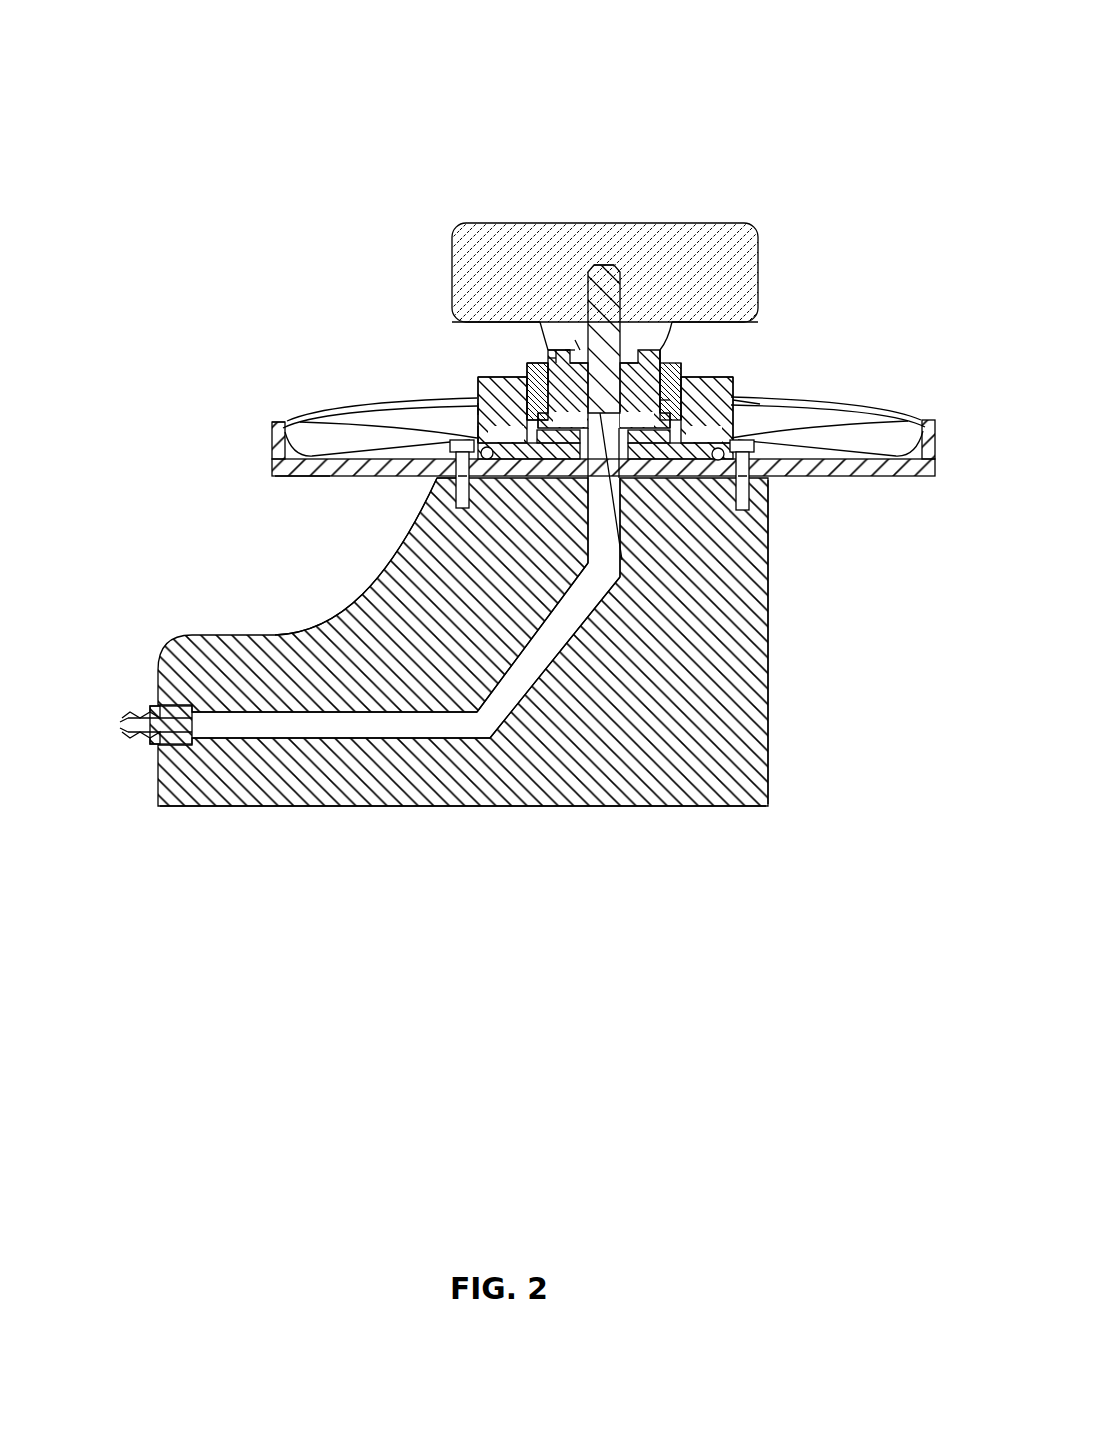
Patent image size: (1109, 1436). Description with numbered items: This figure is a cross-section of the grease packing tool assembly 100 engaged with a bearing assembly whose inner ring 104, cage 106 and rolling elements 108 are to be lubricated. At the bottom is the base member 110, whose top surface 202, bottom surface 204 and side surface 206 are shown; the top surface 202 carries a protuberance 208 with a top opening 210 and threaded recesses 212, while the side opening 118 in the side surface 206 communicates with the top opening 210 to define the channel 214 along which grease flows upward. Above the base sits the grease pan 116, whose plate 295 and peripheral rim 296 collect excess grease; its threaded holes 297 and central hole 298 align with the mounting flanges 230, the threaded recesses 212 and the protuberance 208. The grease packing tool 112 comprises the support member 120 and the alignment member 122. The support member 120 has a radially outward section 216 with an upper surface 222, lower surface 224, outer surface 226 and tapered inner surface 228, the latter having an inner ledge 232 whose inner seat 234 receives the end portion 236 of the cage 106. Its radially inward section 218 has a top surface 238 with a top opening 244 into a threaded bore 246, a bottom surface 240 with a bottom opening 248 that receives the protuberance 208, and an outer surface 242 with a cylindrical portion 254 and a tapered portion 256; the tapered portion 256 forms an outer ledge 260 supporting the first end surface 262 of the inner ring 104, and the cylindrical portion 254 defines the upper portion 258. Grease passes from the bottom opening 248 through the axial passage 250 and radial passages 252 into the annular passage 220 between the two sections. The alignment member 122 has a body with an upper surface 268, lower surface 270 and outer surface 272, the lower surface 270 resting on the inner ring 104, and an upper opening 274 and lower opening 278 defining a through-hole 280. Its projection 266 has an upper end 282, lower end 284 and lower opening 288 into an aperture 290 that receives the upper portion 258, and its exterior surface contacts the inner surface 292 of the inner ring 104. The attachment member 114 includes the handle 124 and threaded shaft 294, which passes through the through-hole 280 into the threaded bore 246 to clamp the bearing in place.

The grease packing tool assembly 100 is at (160, 20).
The inner ring 104 is at (695, 345).
The cage 106 is at (700, 385).
The rolling elements 108 is at (733, 382).
The base member 110 is at (683, 808).
The grease packing tool 112 is at (836, 306).
The attachment member 114 is at (725, 222).
The grease pan 116 is at (272, 462).
The side opening 118 is at (160, 716).
The support member 120 is at (736, 393).
The alignment member 122 is at (655, 350).
The handle 124 is at (580, 223).
The top surface 202 is at (742, 505).
The bottom surface 204 is at (372, 808).
The side surface 206 is at (158, 770).
The protuberance 208 is at (585, 485).
The top opening 210 is at (623, 556).
The threaded recesses 212 is at (448, 485).
The channel 214 is at (341, 725).
The radially outward section 216 is at (755, 405).
The radially inward section 218 is at (662, 483).
The annular passage 220 is at (535, 436).
The upper surface 222 is at (472, 385).
The lower surface 224 is at (463, 510).
The outer surface 226 is at (470, 420).
The inner surface 228 is at (478, 400).
The mounting flanges 230 is at (445, 455).
The inner ledge 232 is at (520, 380).
The inner seat 234 is at (440, 400).
The end portion 236 is at (840, 406).
The top surface 238 is at (630, 350).
The bottom surface 240 is at (714, 461).
The outer surface 242 is at (548, 370).
The top opening 244 is at (612, 278).
The threaded bore 246 is at (620, 566).
The bottom opening 248 is at (628, 480).
The axial passage 250 is at (672, 437).
The radial passages 252 is at (478, 478).
The cylindrical portion 254 is at (662, 350).
The tapered portion 256 is at (662, 360).
The upper portion 258 is at (664, 362).
The outer ledge 260 is at (548, 422).
The first end surface 262 is at (660, 422).
The projection 266 is at (520, 335).
The upper surface 268 is at (656, 356).
The lower surface 270 is at (546, 354).
The outer surface 272 is at (540, 350).
The upper opening 274 is at (574, 348).
The lower opening 278 is at (566, 350).
The through-hole 280 is at (576, 345).
The upper end 282 is at (560, 348).
The lower end 284 is at (538, 360).
The lower opening 288 is at (545, 345).
The aperture 290 is at (548, 358).
The inner surface 292 is at (684, 378).
The threaded shaft 294 is at (618, 265).
The plate 295 is at (306, 468).
The peripheral rim 296 is at (277, 420).
The threaded holes 297 is at (455, 455).
The central hole 298 is at (491, 460).